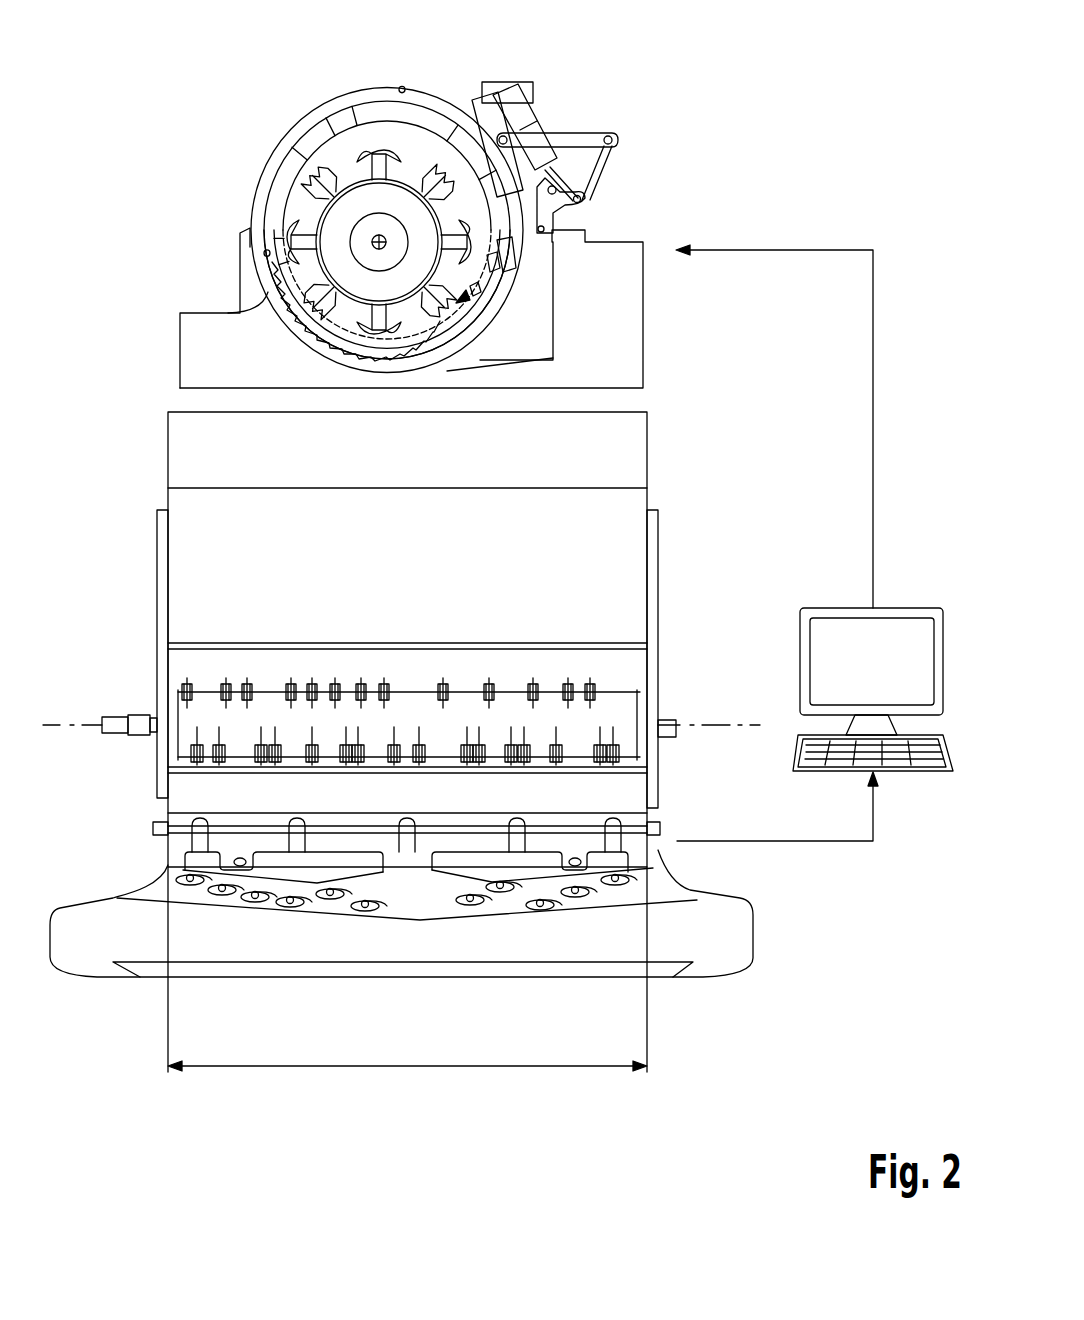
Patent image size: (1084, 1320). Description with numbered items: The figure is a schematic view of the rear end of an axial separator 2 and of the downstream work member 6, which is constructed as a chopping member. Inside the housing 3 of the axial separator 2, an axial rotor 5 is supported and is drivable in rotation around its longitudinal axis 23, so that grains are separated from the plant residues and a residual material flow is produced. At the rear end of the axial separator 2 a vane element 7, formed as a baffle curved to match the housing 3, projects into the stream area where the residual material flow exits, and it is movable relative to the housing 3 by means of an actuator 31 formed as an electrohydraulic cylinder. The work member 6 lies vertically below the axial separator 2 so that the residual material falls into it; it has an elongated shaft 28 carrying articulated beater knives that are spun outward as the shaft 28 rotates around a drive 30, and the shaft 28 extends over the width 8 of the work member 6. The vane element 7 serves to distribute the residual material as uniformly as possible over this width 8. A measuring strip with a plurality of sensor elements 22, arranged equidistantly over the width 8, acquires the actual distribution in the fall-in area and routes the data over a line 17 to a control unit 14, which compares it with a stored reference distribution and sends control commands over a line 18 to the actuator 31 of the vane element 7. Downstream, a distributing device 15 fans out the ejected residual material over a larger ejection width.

The axial separator 2 is at (240, 163).
The housing 3 is at (307, 122).
The axial rotor 5 is at (292, 254).
The vane element 7 is at (515, 253).
The longitudinal axis 23 is at (379, 242).
The actuator 31 is at (538, 142).
The work member 6 is at (140, 682).
The shaft 28 is at (412, 700).
The drive 30 is at (55, 727).
The sensor elements 22 is at (206, 838).
The width 8 is at (412, 1068).
The distributing device 15 is at (795, 938).
The control unit 14 is at (906, 592).
The line 17 is at (737, 841).
The line 18 is at (873, 412).